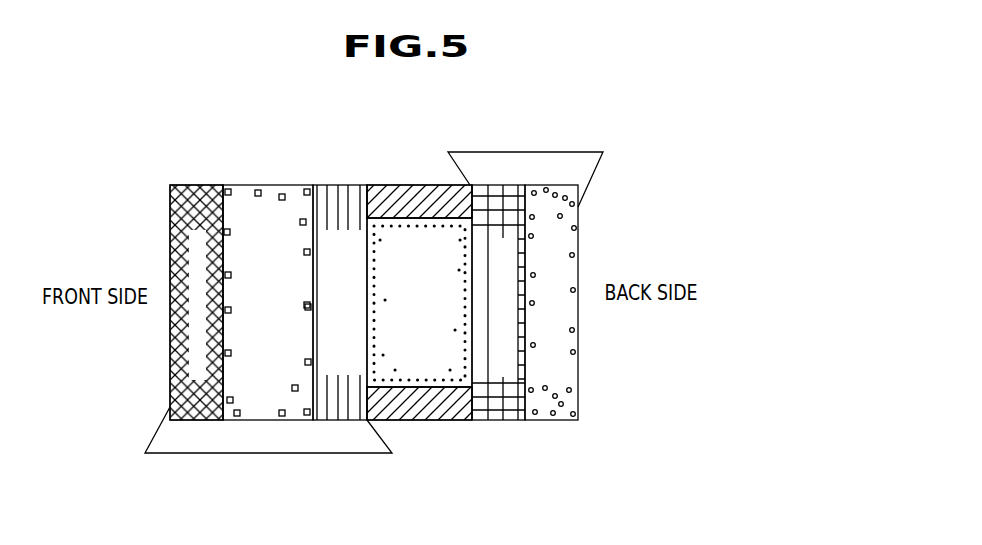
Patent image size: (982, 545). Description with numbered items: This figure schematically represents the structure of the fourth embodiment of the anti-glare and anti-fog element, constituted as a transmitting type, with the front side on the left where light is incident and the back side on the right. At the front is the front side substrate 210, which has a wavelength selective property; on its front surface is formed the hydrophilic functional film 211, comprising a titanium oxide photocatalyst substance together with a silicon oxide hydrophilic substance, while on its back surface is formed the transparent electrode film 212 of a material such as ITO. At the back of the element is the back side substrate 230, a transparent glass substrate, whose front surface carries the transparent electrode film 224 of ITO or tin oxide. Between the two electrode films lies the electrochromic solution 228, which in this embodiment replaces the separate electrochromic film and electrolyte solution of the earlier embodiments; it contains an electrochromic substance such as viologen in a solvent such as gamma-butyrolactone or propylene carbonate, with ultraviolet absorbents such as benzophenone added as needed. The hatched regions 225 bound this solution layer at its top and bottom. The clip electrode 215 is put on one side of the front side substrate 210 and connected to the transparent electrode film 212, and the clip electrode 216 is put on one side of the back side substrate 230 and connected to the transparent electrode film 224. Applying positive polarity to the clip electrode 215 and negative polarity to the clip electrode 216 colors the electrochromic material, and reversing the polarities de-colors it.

The front side substrate 210 is at (268, 413).
The hydrophilic functional film 211 is at (207, 413).
The transparent electrode film 212 is at (343, 413).
The clip electrode 215 is at (168, 431).
The clip electrode 216 is at (577, 166).
The transparent electrode film 224 is at (498, 413).
The sealing member 225 is at (417, 198).
The electrochromic solution 228 is at (452, 413).
The back side substrate 230 is at (550, 413).